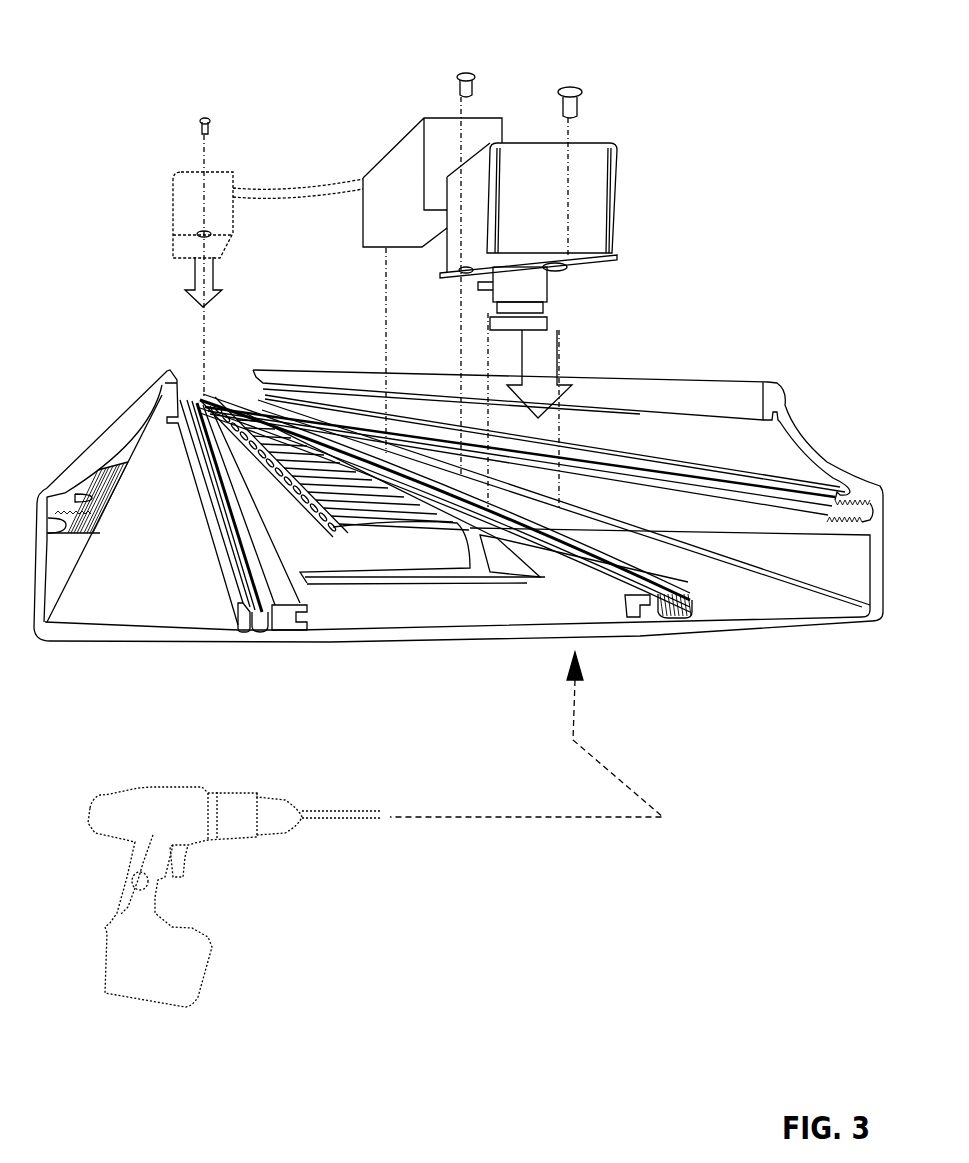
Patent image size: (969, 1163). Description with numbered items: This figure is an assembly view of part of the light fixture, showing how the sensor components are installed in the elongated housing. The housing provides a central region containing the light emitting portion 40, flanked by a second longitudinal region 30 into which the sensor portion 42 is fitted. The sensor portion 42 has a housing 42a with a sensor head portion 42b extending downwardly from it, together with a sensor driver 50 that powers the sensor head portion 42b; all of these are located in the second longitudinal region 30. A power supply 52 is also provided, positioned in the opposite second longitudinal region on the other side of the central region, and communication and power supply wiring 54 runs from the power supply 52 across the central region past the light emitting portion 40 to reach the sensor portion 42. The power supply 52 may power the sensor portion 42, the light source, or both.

The second longitudinal region 30 is at (785, 595).
The light emitting portion 40 is at (478, 599).
The sensor portion 42 is at (598, 256).
The housing 42a is at (597, 207).
The sensor head portion 42b is at (535, 283).
The sensor driver 50 is at (405, 136).
The power supply 52 is at (185, 191).
The communication and power supply wiring 54 is at (248, 188).